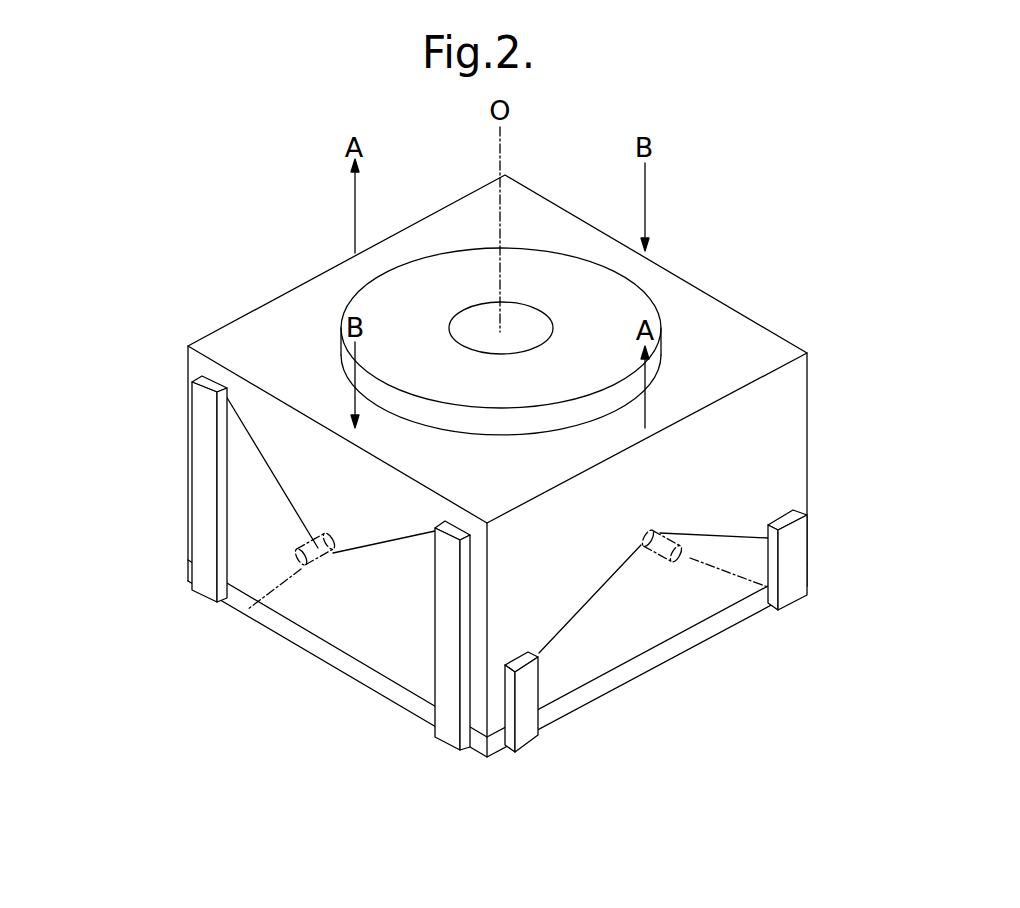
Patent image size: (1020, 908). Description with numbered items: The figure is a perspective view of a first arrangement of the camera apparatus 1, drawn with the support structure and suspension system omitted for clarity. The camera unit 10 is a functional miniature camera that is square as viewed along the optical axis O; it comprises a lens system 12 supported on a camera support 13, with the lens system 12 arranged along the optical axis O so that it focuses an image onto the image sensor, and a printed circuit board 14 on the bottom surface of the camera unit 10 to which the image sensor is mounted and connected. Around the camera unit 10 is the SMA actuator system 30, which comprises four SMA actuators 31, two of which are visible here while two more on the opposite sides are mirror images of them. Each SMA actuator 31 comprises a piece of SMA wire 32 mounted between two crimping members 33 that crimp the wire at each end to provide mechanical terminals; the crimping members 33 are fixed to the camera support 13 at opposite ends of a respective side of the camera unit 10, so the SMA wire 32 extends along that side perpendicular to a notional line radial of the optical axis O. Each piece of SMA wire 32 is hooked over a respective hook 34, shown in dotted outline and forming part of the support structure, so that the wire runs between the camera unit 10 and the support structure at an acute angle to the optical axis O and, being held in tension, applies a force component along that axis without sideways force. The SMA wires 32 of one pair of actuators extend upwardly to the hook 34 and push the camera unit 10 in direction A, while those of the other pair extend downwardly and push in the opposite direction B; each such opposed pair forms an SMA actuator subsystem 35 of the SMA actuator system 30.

The camera apparatus 1 is at (190, 316).
The camera unit 10 is at (740, 445).
The lens system 12 is at (472, 310).
The camera support 13 is at (785, 473).
The printed circuit board 14 is at (637, 667).
The SMA actuator system 30 is at (178, 545).
The SMA actuator 31 is at (357, 552).
The SMA wire 32 is at (373, 548).
The crimping member 33 is at (202, 477).
The hook 34 is at (248, 608).
The SMA actuator subsystem 35 is at (310, 598).